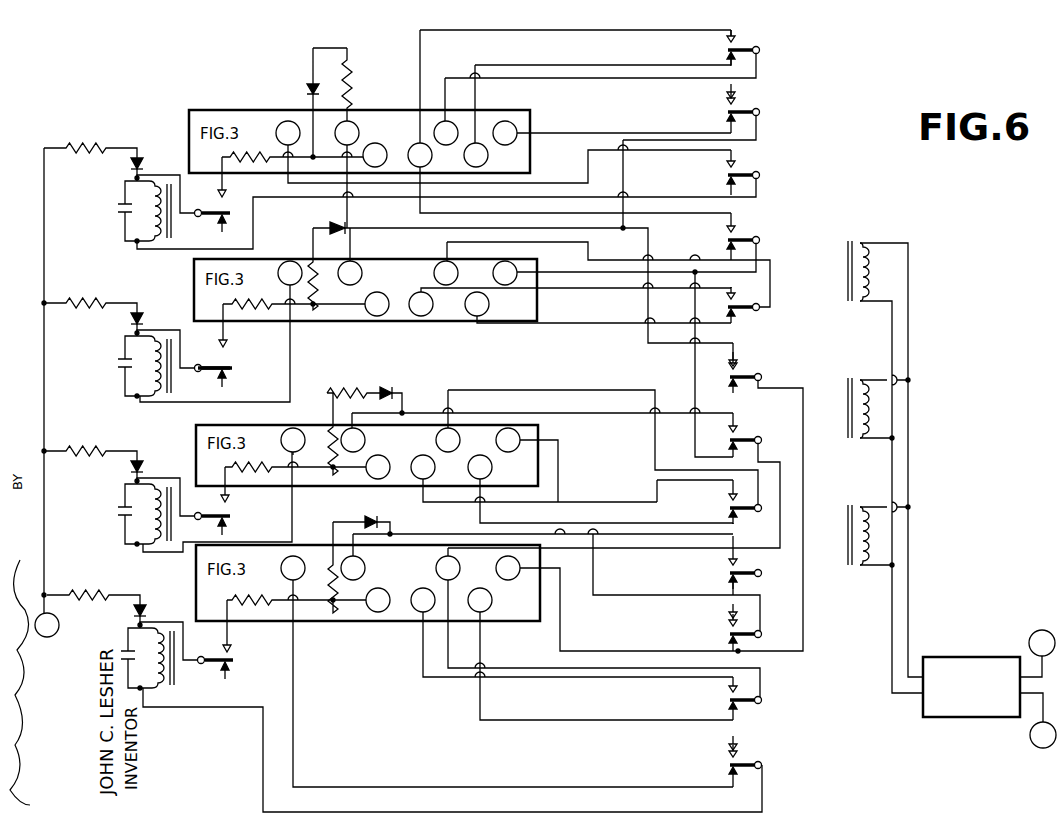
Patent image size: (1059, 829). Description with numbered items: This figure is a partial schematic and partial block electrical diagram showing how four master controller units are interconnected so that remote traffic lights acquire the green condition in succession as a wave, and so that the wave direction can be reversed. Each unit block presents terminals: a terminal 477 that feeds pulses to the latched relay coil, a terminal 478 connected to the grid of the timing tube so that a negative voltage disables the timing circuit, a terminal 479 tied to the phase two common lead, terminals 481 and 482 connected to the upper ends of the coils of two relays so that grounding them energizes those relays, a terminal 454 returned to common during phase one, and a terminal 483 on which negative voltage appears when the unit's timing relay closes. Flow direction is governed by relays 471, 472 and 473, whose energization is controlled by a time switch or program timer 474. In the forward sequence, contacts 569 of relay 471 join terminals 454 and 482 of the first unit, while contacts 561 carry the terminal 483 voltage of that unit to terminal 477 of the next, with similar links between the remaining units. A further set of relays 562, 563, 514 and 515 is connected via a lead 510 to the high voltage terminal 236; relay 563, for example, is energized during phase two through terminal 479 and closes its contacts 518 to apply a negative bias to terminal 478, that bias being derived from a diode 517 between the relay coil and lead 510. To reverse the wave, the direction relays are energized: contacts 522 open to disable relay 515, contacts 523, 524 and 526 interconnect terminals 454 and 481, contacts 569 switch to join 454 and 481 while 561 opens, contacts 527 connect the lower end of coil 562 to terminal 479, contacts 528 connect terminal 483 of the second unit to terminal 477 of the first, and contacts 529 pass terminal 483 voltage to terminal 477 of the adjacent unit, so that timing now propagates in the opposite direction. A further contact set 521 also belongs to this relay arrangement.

The lead 510 is at (46, 400).
The high voltage terminal 236 is at (59, 625).
The relay 562 is at (166, 156).
The diode 517 is at (141, 318).
The relay 563 is at (210, 360).
The contacts 518 is at (232, 371).
The relay 514 is at (206, 513).
The relay 515 is at (206, 650).
The terminal 479 is at (309, 109).
The terminal 477 is at (359, 133).
The terminal 478 is at (385, 146).
The terminal 481 is at (419, 596).
The terminal 454 is at (449, 121).
The terminal 482 is at (498, 611).
The terminal 483 is at (513, 121).
The contacts 569 is at (740, 58).
The contacts 561 is at (740, 120).
The contacts 527 is at (744, 165).
The contacts 528 is at (744, 232).
The contacts 526 is at (740, 312).
The switch 521 is at (744, 438).
The contacts 524 is at (742, 500).
The contacts 529 is at (742, 565).
The contacts 523 is at (740, 700).
The contacts 522 is at (746, 760).
The relay 471 is at (878, 333).
The relay 472 is at (880, 479).
The relay 473 is at (878, 609).
The program timer 474 is at (979, 654).